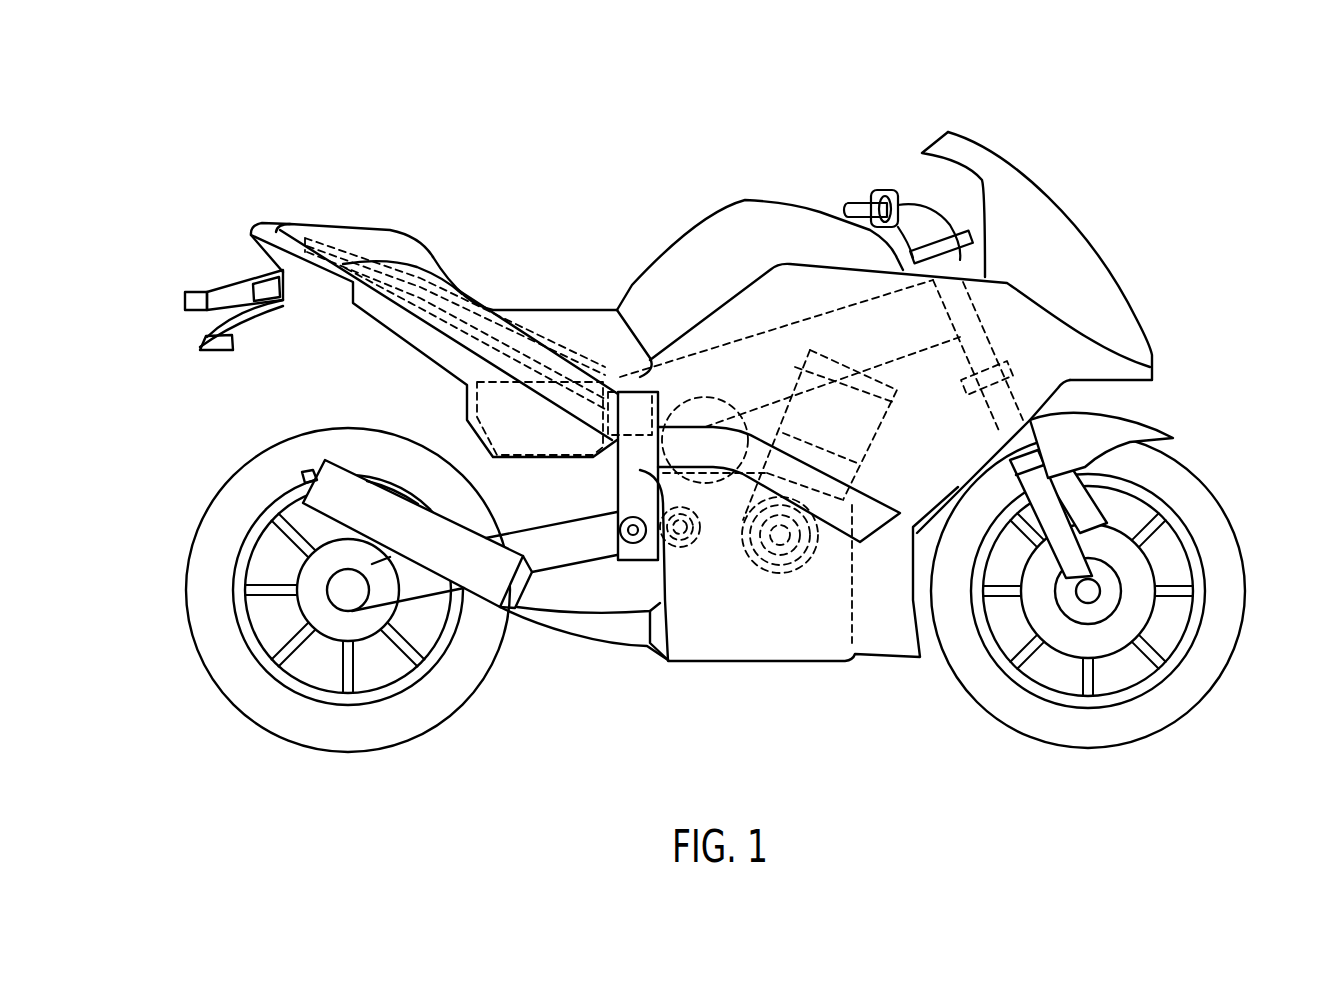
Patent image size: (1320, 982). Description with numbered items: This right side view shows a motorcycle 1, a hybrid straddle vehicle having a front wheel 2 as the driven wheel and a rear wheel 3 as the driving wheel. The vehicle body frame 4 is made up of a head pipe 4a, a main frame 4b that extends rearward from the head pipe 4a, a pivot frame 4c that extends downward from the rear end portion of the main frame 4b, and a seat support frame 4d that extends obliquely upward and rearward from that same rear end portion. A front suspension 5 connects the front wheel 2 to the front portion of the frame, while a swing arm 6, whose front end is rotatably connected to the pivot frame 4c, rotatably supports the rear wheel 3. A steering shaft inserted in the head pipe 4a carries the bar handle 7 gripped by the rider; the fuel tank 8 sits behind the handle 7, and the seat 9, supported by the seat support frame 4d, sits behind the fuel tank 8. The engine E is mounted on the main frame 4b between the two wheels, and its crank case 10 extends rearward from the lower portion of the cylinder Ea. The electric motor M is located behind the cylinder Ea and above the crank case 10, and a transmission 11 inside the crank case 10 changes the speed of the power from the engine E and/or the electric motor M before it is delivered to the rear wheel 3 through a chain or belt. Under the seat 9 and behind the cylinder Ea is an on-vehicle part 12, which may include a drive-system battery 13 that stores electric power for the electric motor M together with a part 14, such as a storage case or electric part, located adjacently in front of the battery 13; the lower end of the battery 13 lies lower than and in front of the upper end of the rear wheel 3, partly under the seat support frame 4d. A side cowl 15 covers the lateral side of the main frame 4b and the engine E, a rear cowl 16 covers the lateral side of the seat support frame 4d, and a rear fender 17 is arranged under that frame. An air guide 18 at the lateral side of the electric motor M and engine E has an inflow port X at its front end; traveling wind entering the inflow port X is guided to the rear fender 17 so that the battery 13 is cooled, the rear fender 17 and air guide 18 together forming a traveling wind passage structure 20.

The motorcycle 1 is at (1088, 112).
The front wheel 2 is at (1222, 505).
The rear wheel 3 is at (185, 574).
The vehicle body frame 4 is at (643, 562).
The head pipe 4a is at (948, 268).
The main frame 4b is at (753, 333).
The pivot frame 4c is at (632, 545).
The seat support frame 4d is at (436, 282).
The front suspension 5 is at (1040, 468).
The swing arm 6 is at (410, 587).
The bar handle 7 is at (857, 200).
The fuel tank 8 is at (703, 207).
The seat 9 is at (547, 305).
The crank case 10 is at (802, 597).
The transmission 11 is at (704, 585).
The on-vehicle part 12 is at (577, 460).
The drive-system battery 13 is at (497, 410).
The part 14 is at (613, 388).
The side cowl 15 is at (1040, 350).
The rear cowl 16 is at (420, 272).
The rear fender 17 is at (400, 347).
The air guide 18 is at (753, 466).
The traveling wind passage structure 20 is at (528, 462).
The engine E is at (810, 350).
The electric motor M is at (706, 385).
The inflow port X is at (877, 445).
The cylinder Ea is at (893, 425).